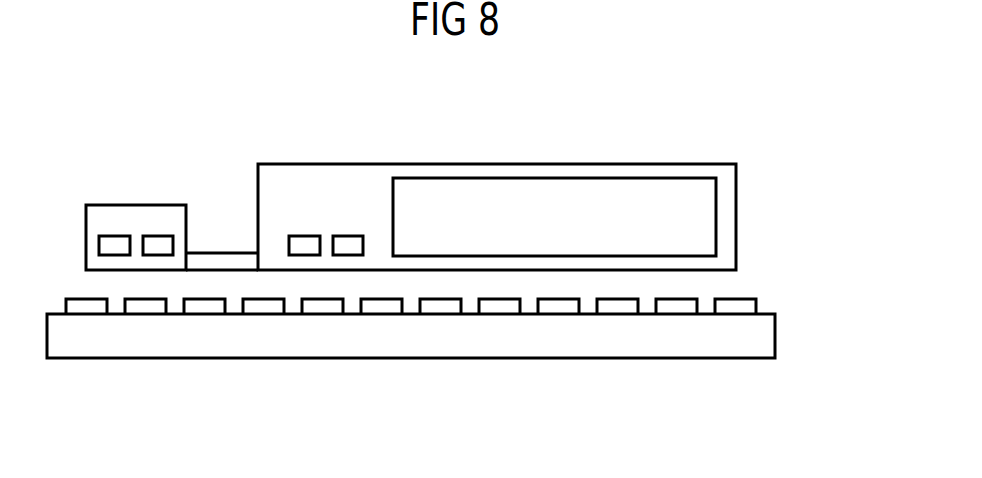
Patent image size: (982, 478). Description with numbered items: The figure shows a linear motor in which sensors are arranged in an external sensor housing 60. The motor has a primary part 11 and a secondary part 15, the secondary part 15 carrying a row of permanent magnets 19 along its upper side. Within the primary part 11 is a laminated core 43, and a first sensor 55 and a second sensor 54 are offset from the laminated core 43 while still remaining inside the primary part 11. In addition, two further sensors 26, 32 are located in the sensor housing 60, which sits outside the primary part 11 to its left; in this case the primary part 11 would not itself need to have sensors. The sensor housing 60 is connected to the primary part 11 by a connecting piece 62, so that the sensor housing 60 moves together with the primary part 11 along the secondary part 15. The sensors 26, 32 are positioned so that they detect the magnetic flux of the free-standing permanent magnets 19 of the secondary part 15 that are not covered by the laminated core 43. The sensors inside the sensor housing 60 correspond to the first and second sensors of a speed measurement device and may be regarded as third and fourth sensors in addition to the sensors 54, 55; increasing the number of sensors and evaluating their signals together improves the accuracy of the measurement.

The sensor housing 60 is at (135, 187).
The sensor 26 is at (110, 236).
The sensor 32 is at (160, 236).
The connecting piece 62 is at (223, 260).
The primary part 11 is at (736, 222).
The second sensor 54 is at (305, 236).
The first sensor 55 is at (348, 236).
The laminated core 43 is at (552, 178).
The secondary part 15 is at (775, 334).
The permanent magnets 19 is at (678, 307).